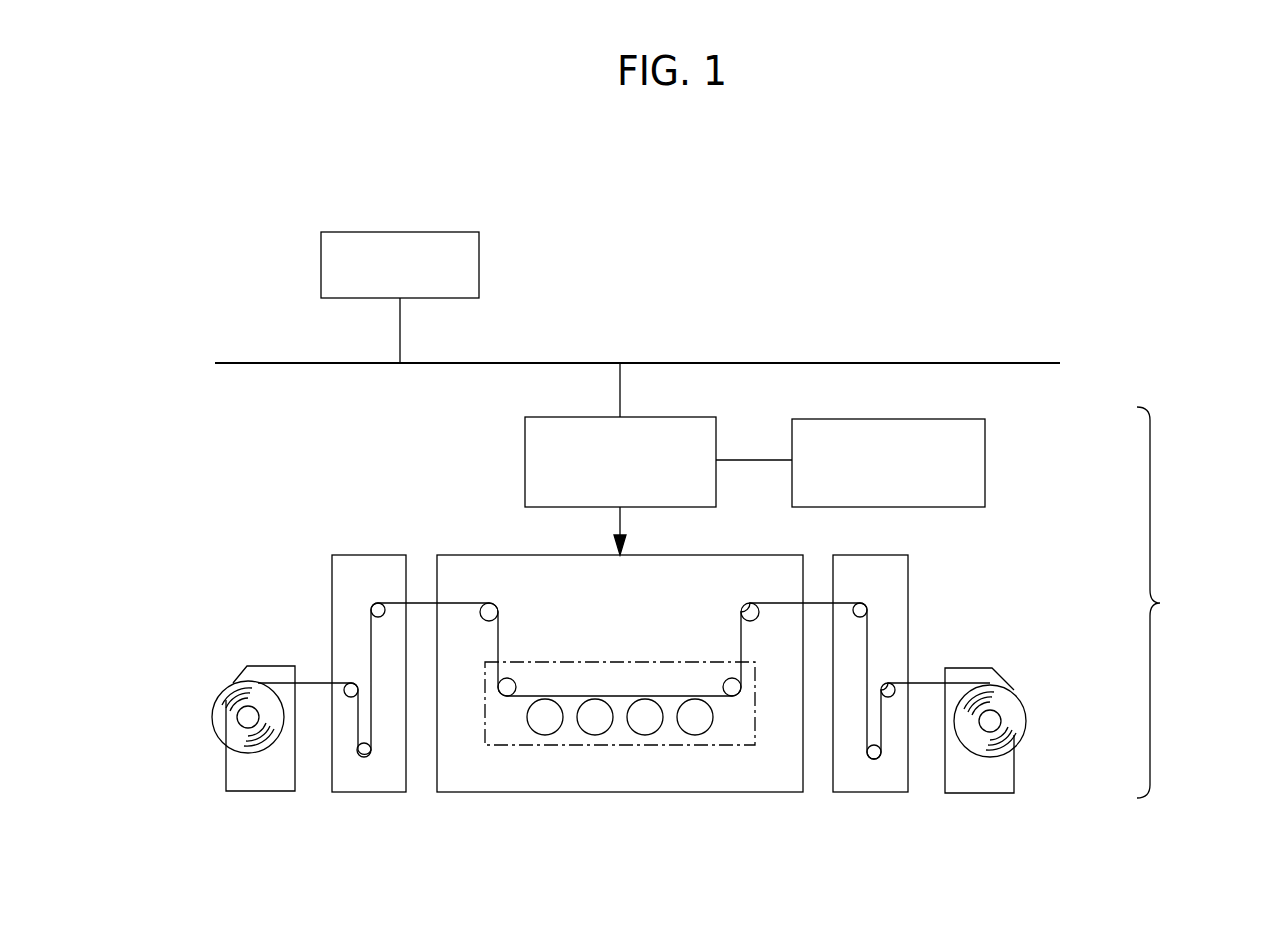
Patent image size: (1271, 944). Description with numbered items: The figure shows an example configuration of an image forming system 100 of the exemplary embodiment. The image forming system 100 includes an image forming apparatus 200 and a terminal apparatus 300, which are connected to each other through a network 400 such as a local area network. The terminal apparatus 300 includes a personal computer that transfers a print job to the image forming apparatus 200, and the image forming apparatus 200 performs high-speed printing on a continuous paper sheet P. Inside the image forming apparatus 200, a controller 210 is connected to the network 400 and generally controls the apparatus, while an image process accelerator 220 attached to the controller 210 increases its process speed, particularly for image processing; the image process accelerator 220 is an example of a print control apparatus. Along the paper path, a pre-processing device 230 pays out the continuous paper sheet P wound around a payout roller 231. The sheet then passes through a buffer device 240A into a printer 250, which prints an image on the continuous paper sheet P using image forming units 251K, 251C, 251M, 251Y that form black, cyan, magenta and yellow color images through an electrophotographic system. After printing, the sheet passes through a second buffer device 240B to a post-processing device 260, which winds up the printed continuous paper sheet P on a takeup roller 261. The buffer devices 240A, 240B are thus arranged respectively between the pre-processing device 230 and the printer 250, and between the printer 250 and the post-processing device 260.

The image forming system 100 is at (928, 227).
The image forming apparatus 200 is at (1171, 602).
The controller 210 is at (525, 462).
The image process accelerator 220 is at (985, 462).
The pre-processing device 230 is at (260, 666).
The payout roller 231 is at (215, 700).
The buffer device 240A is at (362, 555).
The buffer device 240B is at (908, 592).
The printer 250 is at (478, 555).
The image forming unit 251K is at (545, 735).
The image forming unit 251C is at (595, 735).
The image forming unit 251M is at (645, 735).
The image forming unit 251Y is at (695, 735).
The post-processing device 260 is at (980, 668).
The takeup roller 261 is at (1026, 706).
The terminal apparatus 300 is at (428, 232).
The network 400 is at (980, 363).
The continuous paper sheet P is at (316, 683).